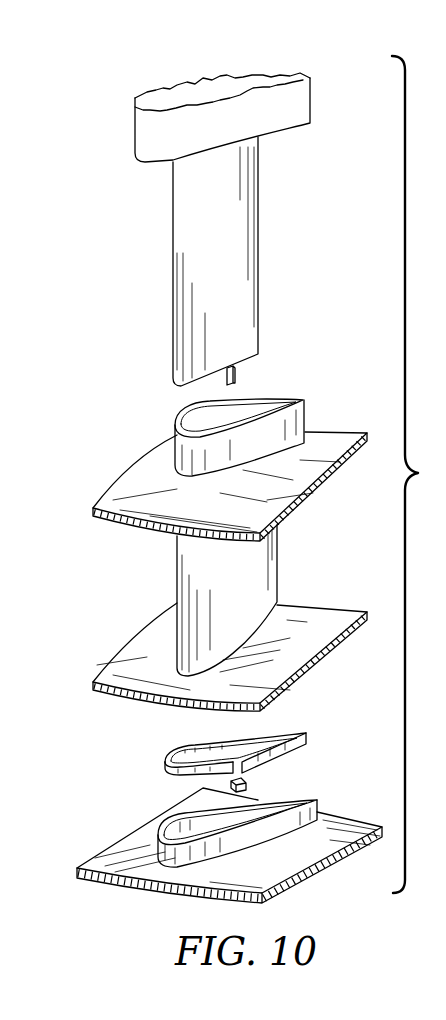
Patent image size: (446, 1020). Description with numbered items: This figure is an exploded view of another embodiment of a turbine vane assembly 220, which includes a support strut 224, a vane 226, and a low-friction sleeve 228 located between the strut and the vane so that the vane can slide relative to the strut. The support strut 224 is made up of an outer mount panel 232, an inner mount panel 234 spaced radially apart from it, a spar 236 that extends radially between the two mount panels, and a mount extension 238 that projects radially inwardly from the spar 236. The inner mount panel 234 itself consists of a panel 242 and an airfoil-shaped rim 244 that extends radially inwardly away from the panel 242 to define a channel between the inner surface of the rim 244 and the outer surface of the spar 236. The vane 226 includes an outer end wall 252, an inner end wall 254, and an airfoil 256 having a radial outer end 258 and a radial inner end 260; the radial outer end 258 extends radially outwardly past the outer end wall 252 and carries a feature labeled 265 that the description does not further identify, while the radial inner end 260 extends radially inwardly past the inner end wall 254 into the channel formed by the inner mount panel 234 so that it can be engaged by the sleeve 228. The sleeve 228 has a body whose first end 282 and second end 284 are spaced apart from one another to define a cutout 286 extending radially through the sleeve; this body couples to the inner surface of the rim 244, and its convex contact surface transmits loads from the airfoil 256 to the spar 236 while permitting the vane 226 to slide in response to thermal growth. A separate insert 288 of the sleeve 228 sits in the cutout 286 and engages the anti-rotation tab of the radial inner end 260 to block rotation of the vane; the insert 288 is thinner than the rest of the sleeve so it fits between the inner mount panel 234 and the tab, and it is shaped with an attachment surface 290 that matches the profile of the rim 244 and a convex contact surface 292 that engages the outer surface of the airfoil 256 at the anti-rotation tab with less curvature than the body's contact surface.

The turbine vane assembly 220 is at (127, 78).
The outer mount panel 232 is at (135, 125).
The support strut 224 is at (148, 195).
The spar 236 is at (173, 257).
The mount extension 238 is at (238, 373).
The opening 265 is at (208, 425).
The radial outer end 258 is at (307, 413).
The outer end wall 252 is at (123, 493).
The airfoil 256 is at (178, 568).
The vane 226 is at (135, 603).
The inner end wall 254 is at (128, 672).
The radial inner end 260 is at (282, 638).
The sleeve 228 is at (157, 760).
The first end 282 is at (233, 760).
The second end 284 is at (246, 770).
The cutout 286 is at (248, 777).
The insert 288 is at (210, 782).
The attachment surface 290 is at (203, 788).
The contact surface 292 is at (258, 801).
The rim 244 is at (327, 803).
The inner mount panel 234 is at (125, 847).
The panel 242 is at (150, 865).